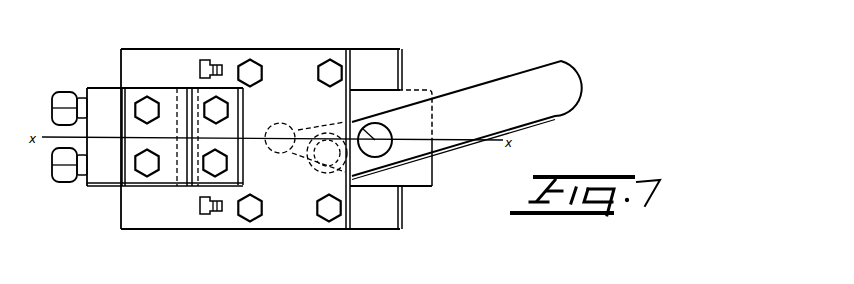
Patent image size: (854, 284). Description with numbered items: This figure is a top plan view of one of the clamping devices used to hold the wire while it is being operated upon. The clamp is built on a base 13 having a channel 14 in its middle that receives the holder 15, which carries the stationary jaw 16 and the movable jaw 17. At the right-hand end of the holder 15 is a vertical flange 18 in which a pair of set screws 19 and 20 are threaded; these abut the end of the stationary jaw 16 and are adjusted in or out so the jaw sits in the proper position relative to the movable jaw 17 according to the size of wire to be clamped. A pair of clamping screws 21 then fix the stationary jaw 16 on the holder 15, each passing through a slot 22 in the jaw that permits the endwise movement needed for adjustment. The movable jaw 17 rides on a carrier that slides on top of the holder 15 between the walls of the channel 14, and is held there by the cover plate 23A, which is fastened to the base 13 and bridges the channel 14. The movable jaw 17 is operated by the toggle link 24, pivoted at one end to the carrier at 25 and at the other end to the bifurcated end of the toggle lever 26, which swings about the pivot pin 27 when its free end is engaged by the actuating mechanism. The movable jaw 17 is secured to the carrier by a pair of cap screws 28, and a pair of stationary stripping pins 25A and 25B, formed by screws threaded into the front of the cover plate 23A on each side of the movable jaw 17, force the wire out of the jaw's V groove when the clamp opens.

The base 13 is at (371, 228).
The channel 14 is at (383, 191).
The holder 15 is at (422, 177).
The stationary jaw 16 is at (152, 180).
The movable jaw 17 is at (227, 180).
The vertical flange 18 is at (100, 176).
The set screw 19 is at (62, 174).
The set screw 20 is at (67, 100).
The clamping screws 21 is at (148, 105).
The slot 22 is at (137, 105).
The cover plate 23A is at (287, 60).
The toggle link 24 is at (307, 127).
The pivot 25 is at (280, 152).
The stripping pin 25A is at (210, 62).
The stripping pin 25B is at (206, 217).
The toggle lever 26 is at (462, 98).
The pivot pin 27 is at (375, 140).
The cap screws 28 is at (220, 100).